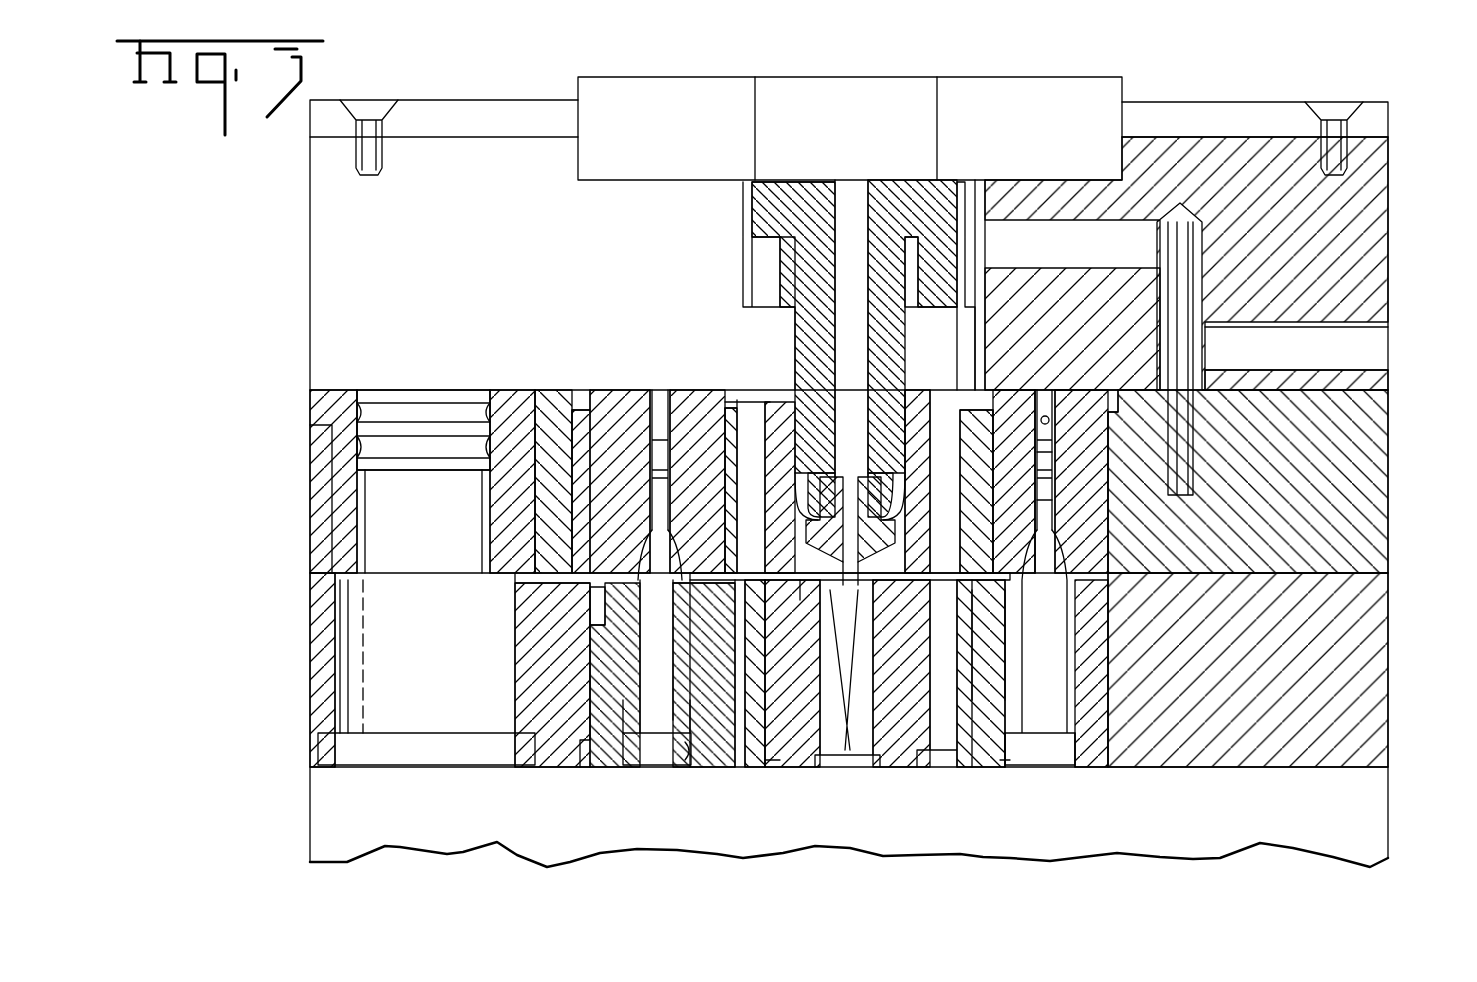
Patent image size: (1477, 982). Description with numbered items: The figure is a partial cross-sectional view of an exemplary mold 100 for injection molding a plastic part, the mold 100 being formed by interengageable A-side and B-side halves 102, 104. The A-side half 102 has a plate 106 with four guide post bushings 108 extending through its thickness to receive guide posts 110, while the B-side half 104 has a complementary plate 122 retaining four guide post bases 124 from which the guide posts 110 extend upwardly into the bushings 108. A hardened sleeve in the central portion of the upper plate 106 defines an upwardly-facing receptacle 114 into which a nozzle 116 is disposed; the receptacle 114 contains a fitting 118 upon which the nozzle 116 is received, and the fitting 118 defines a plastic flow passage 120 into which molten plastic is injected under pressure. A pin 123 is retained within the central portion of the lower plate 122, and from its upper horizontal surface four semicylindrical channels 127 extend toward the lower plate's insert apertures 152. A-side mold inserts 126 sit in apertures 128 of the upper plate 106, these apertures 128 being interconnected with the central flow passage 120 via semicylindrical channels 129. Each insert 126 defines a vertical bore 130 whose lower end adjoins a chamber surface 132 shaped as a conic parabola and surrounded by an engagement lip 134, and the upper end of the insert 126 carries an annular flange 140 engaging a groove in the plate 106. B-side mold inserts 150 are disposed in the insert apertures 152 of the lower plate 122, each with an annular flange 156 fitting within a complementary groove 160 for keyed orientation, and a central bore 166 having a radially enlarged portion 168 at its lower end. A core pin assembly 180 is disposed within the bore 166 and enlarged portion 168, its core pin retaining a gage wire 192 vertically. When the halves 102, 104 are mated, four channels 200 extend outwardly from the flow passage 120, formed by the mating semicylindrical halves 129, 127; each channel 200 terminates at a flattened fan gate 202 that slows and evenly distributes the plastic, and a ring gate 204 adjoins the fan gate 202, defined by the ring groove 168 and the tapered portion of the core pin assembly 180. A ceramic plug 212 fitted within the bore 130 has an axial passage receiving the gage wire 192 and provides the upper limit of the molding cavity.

The mold 100 is at (296, 537).
The A-side mold half 102 is at (512, 385).
The B-side mold half 104 is at (545, 770).
The plate 106 is at (552, 390).
The guide post bushings 108 is at (340, 390).
The guide posts 110 is at (415, 390).
The receptacle 114 is at (800, 575).
The nozzle 116 is at (890, 355).
The fitting 118 is at (762, 390).
The plastic flow passage 120 is at (950, 740).
The plate 122 is at (555, 745).
The pin 123 is at (953, 767).
The guide post bases 124 is at (345, 655).
The A-side mold inserts 126 is at (955, 390).
The semicylindrical channels 127 is at (905, 590).
The insert apertures 128 is at (490, 435).
The semicylindrical channels 129 is at (974, 466).
The vertical bore 130 is at (1045, 390).
The chamber surface 132 is at (1100, 557).
The engagement lip 134 is at (603, 665).
The annular flange 140 is at (742, 395).
The B-side mold inserts 150 is at (975, 590).
The insert apertures 152 is at (735, 600).
The annular flange 156 is at (1050, 745).
The groove 160 is at (1115, 762).
The central bore 166 is at (645, 705).
The radially enlarged portion 168 is at (686, 750).
The core pin assembly 180 is at (1078, 648).
The gage wire 192 is at (490, 460).
The channels 200 is at (800, 590).
The fan gate 202 is at (765, 770).
The ring gate 204 is at (1010, 740).
The ceramic plug 212 is at (490, 470).